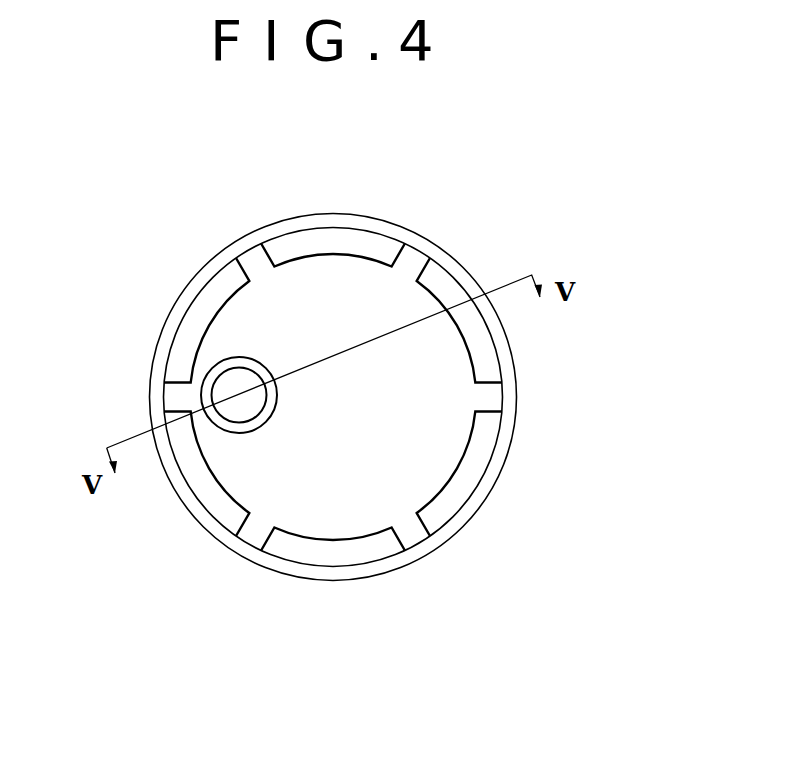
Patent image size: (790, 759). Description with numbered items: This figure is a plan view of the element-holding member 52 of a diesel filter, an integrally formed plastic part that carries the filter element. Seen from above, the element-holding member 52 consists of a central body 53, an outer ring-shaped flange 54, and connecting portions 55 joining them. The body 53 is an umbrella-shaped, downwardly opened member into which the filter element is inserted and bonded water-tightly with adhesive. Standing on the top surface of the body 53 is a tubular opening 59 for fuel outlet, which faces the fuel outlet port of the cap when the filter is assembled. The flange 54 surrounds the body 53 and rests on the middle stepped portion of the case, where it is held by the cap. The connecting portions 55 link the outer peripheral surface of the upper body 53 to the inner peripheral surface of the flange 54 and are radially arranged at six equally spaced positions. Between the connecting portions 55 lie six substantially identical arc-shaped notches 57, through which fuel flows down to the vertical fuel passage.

The element-holding member 52 is at (343, 403).
The body 53 is at (475, 513).
The flange 54 is at (470, 283).
The connecting portions 55 is at (247, 257).
The arc-shaped notches 57 is at (335, 237).
The opening for fuel outlet 59 is at (277, 395).